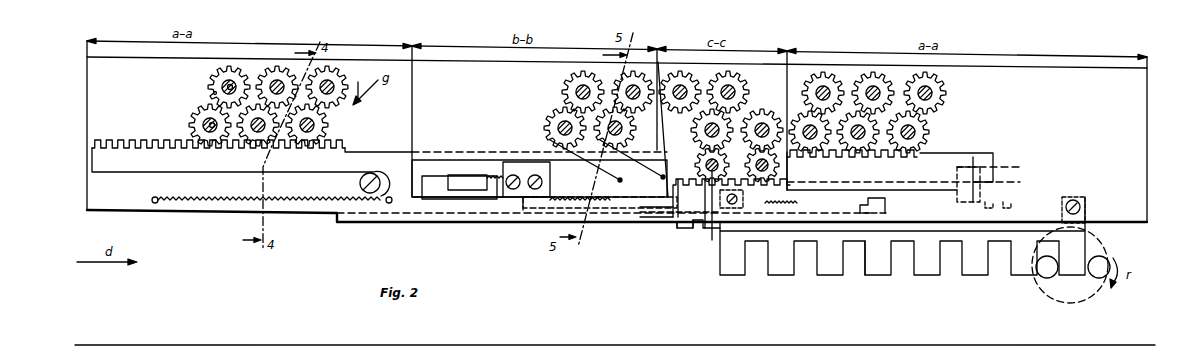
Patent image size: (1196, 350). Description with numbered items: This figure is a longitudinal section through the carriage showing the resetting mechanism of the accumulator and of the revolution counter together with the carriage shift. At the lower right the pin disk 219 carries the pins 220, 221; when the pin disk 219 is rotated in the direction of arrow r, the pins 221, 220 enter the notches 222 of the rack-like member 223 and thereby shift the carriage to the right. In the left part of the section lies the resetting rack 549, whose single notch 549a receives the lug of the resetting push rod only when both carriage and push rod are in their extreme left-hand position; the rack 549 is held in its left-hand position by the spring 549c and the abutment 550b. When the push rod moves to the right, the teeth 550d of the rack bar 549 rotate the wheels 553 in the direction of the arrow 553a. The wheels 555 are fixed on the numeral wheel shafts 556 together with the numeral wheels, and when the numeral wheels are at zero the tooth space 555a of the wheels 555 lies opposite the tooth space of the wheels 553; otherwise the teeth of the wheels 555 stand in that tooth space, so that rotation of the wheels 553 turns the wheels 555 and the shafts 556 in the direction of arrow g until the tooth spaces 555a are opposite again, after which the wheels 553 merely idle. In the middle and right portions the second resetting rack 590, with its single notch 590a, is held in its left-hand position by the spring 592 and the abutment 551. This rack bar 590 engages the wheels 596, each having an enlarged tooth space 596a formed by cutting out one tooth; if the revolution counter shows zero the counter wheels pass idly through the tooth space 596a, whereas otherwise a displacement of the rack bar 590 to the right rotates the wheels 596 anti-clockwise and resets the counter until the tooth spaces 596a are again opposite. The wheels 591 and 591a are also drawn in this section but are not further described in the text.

The pin disk 219 is at (1107, 248).
The pin 220 is at (1098, 278).
The pin 221 is at (1045, 278).
The notches 222 is at (762, 261).
The rack-like member 223 is at (880, 262).
The resetting rack 549 is at (356, 163).
The notch 549a is at (677, 244).
The spring 549c is at (223, 205).
The abutment 550b is at (357, 184).
The teeth 550d is at (132, 140).
The abutment 551 is at (512, 172).
The wheels 553 is at (205, 116).
The arrow 553a is at (218, 118).
The wheels 555 is at (212, 85).
The tooth space 555a is at (214, 92).
The numeral wheel shafts 556 is at (230, 80).
The resetting rack 590 is at (887, 205).
The notch 590a is at (868, 210).
The gear 591 is at (772, 123).
The gear 591a is at (699, 131).
The spring 592 is at (607, 207).
The wheels 596 is at (701, 159).
The enlarged tooth space 596a is at (690, 223).